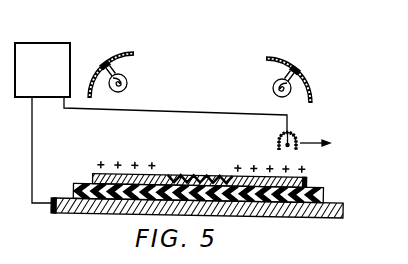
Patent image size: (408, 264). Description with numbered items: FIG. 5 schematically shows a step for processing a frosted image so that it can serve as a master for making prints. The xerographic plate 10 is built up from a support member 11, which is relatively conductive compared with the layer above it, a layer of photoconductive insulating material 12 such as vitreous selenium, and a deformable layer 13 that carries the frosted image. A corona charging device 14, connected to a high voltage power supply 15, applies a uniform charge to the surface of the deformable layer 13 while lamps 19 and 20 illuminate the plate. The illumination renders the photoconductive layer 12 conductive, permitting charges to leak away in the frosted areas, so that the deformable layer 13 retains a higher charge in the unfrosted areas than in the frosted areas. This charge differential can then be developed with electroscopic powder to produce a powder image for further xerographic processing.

The xerographic plate 10 is at (214, 192).
The support member 11 is at (344, 210).
The layer of photoconductive insulating material 12 is at (323, 199).
The deformable layer 13 is at (305, 180).
The corona charging device 14 is at (298, 137).
The high voltage power supply 15 is at (70, 49).
The lamp 19 is at (128, 78).
The lamp 20 is at (272, 82).